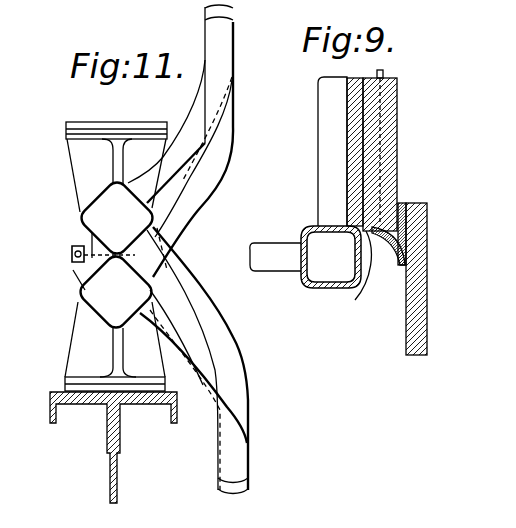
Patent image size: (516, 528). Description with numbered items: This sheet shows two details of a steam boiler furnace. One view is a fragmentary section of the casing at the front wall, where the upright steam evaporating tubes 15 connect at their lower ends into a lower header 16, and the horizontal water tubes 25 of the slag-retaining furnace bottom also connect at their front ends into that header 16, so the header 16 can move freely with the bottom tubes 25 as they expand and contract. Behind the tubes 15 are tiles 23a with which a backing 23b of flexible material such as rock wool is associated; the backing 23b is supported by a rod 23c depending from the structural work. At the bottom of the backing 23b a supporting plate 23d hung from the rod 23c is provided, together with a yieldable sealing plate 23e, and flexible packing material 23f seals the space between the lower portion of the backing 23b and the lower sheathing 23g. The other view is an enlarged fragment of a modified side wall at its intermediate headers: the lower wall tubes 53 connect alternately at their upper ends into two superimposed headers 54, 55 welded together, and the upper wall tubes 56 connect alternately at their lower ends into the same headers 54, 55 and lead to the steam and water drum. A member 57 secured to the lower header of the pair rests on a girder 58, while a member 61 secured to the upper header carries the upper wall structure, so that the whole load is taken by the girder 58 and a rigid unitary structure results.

In FIG. 11, the member 61 is at (83, 163).
In FIG. 11, the member 57 is at (82, 343).
In FIG. 11, the girder 58 is at (110, 471).
In FIG. 11, the header 55 is at (116, 217).
In FIG. 11, the header 54 is at (115, 291).
In FIG. 11, the wall tubes 56 is at (185, 157).
In FIG. 11, the wall tubes 53 is at (227, 422).
In FIG. 9, the upright steam evaporating tubes 15 is at (323, 193).
In FIG. 9, the lower header 16 is at (330, 288).
In FIG. 9, the water tubes 25 is at (280, 272).
In FIG. 9, the tiles 23a is at (348, 118).
In FIG. 9, the backing 23b is at (396, 151).
In FIG. 9, the rod 23c is at (383, 75).
In FIG. 9, the supporting plate 23d is at (361, 290).
In FIG. 9, the yieldable sealing plate 23e is at (396, 255).
In FIG. 9, the flexible packing material 23f is at (400, 203).
In FIG. 9, the lower sheathing 23g is at (420, 357).